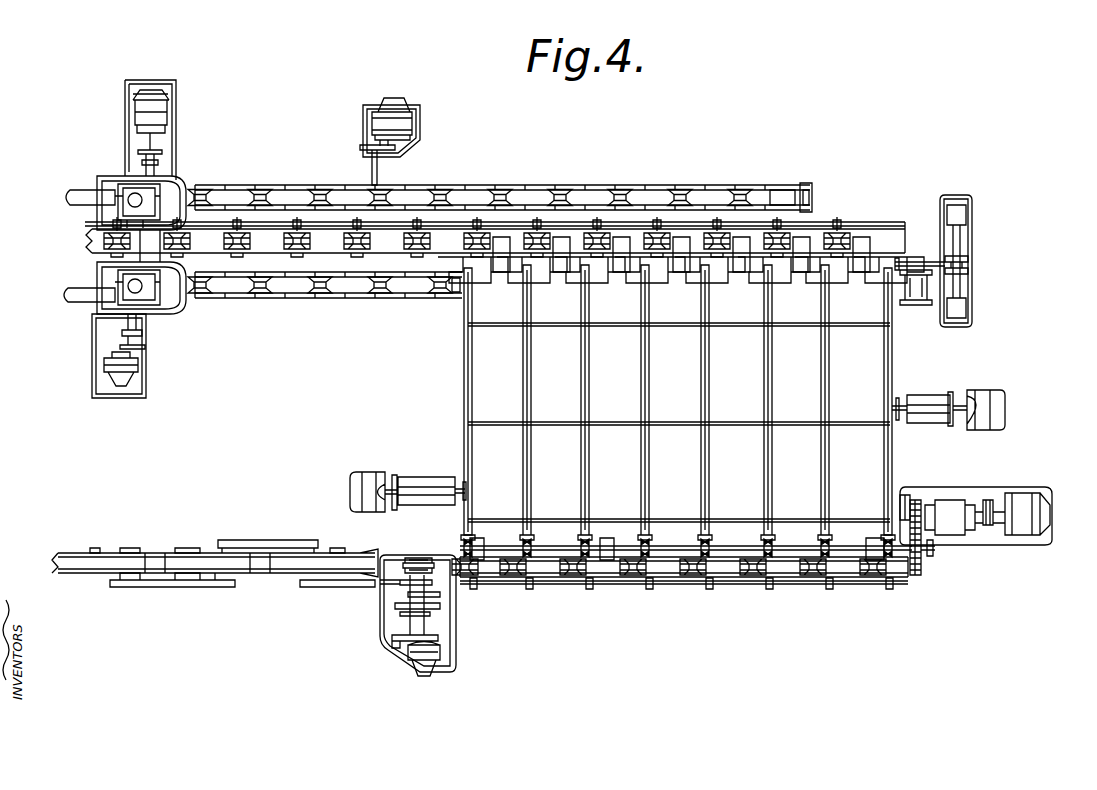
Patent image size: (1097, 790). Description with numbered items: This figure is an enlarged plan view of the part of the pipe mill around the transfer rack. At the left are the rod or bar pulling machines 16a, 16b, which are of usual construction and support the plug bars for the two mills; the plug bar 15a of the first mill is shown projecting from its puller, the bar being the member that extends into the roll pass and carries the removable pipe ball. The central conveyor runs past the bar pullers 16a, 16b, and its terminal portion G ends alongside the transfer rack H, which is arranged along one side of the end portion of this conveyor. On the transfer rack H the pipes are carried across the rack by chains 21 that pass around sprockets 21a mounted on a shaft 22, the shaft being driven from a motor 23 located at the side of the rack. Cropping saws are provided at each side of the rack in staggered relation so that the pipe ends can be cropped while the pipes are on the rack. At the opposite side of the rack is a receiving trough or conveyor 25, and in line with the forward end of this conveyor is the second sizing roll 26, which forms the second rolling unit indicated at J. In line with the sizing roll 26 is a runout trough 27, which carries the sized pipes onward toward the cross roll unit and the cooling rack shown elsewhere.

The plug bar 15a is at (78, 186).
The rod or bar pulling machine 16a is at (152, 190).
The rod or bar pulling machine 16b is at (150, 296).
The terminal portion of the conveyor G is at (638, 190).
The transfer rack H is at (681, 398).
The chains 21 is at (822, 365).
The sprockets 21a is at (826, 544).
The shaft 22 is at (843, 545).
The motor 23 is at (960, 538).
The receiving trough or conveyor 25 is at (668, 569).
The second sizing roll 26 is at (428, 550).
The runout trough 27 is at (258, 575).
The second rolling unit J is at (440, 670).